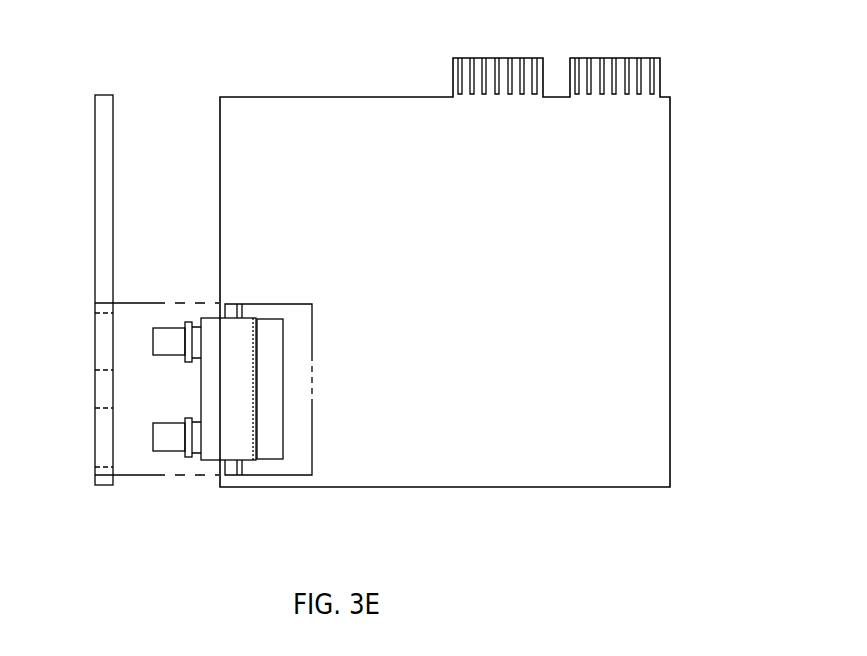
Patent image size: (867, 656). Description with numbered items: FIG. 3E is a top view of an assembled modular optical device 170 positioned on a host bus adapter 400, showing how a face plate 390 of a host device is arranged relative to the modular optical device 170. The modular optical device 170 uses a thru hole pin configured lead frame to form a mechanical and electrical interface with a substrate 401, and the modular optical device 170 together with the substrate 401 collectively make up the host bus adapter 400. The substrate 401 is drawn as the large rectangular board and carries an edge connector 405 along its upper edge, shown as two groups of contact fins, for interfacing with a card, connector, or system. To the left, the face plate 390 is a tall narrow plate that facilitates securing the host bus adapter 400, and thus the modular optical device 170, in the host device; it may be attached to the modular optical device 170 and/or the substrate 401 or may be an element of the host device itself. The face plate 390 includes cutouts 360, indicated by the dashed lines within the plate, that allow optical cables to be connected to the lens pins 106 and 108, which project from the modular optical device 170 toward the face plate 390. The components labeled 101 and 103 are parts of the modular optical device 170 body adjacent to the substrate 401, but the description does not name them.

The host bus adapter 400 is at (498, 266).
The substrate 401 is at (570, 468).
The edge connector 405 is at (595, 58).
The face plate 390 is at (105, 487).
The cutouts 360 is at (102, 349).
The modular optical device 170 is at (178, 502).
The connector body 103 is at (242, 448).
The connector base 101 is at (267, 447).
The lens pin 108 is at (170, 345).
The lens pin 106 is at (168, 437).